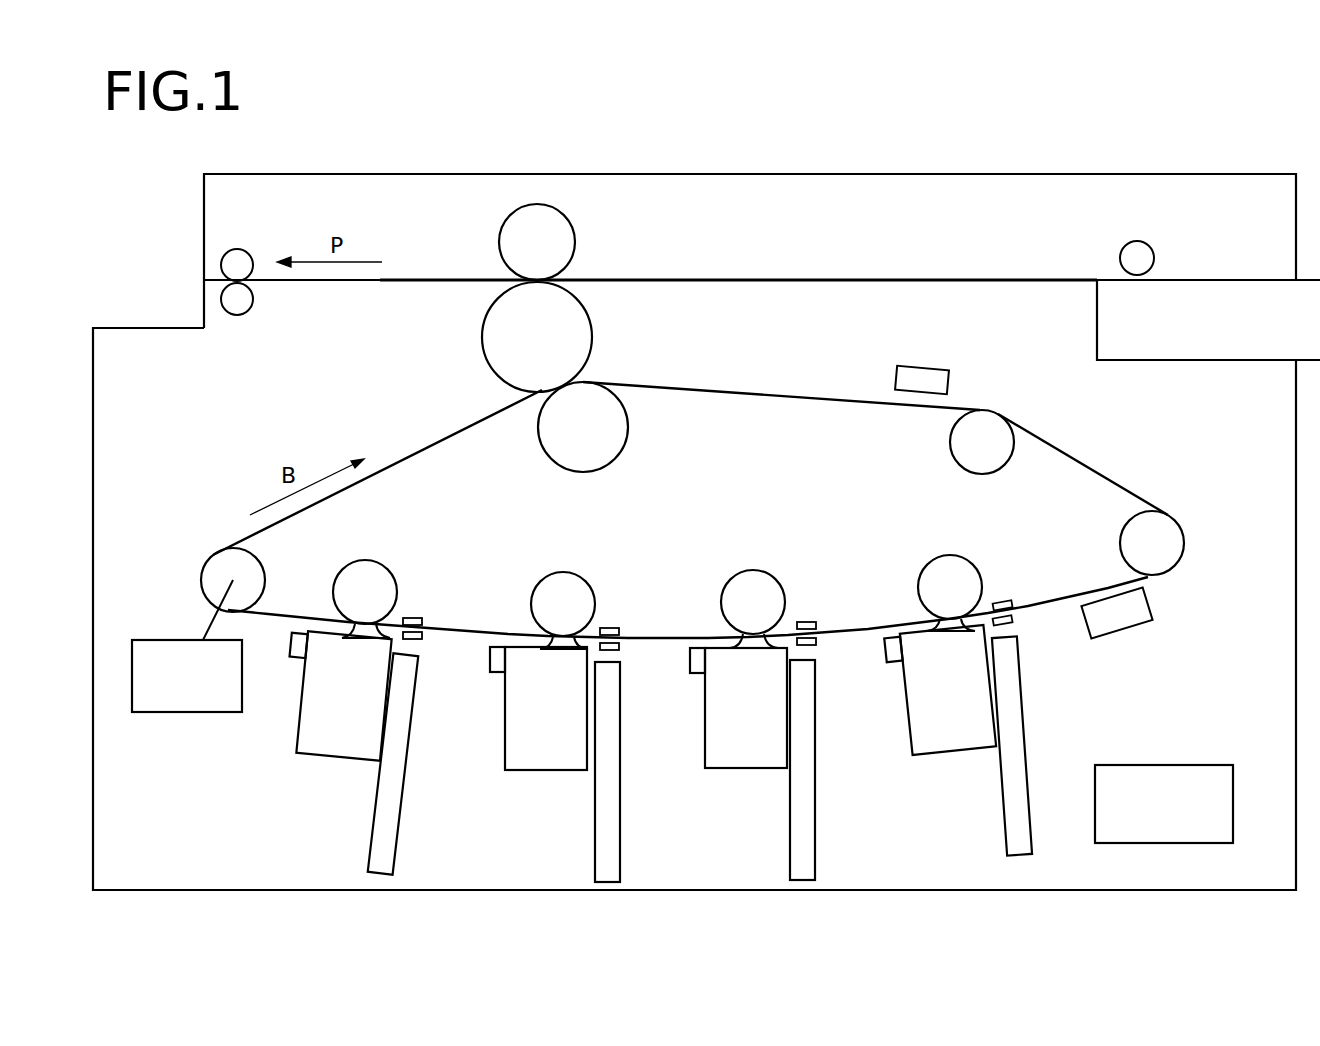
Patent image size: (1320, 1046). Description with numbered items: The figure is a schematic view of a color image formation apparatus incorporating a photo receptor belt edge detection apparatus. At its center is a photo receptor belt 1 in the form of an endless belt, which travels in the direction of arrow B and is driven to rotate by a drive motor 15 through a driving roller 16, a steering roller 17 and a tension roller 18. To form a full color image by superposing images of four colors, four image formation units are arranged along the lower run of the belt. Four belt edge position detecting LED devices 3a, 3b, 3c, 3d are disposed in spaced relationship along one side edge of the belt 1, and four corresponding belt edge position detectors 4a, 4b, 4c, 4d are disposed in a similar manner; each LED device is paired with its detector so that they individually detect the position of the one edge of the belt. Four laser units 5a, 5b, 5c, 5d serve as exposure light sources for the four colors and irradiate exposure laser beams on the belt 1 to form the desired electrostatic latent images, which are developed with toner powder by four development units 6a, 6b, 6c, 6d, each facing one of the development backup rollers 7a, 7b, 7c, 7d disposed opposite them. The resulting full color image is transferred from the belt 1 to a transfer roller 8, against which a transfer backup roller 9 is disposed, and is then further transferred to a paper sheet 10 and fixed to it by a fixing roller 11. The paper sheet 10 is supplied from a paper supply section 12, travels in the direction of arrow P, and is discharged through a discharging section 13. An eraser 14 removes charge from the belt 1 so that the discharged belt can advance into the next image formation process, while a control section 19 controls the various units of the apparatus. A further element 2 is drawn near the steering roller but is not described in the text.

The photo receptor belt 1 is at (1075, 455).
The belt cleaning device 2 is at (1140, 605).
The belt edge position detecting LED device 3a is at (1012, 620).
The belt edge position detecting LED device 3b is at (818, 642).
The belt edge position detecting LED device 3c is at (620, 646).
The belt edge position detecting LED device 3d is at (424, 637).
The belt edge position detector 4a is at (1012, 603).
The belt edge position detector 4b is at (818, 622).
The belt edge position detector 4c is at (620, 628).
The belt edge position detector 4d is at (424, 618).
The laser unit 5a is at (1026, 735).
The laser unit 5b is at (815, 838).
The laser unit 5c is at (612, 838).
The laser unit 5d is at (398, 840).
The development unit 6a is at (957, 752).
The development unit 6b is at (745, 770).
The development unit 6c is at (545, 770).
The development unit 6d is at (330, 762).
The development backup roller 7a is at (948, 555).
The development backup roller 7b is at (753, 570).
The development backup roller 7c is at (563, 572).
The development backup roller 7d is at (367, 560).
The transfer roller 8 is at (578, 338).
The transfer backup roller 9 is at (624, 400).
The paper sheet 10 is at (428, 282).
The fixing roller 11 is at (565, 232).
The paper supply section 12 is at (1153, 255).
The discharging section 13 is at (250, 252).
The eraser 14 is at (950, 382).
The drive motor 15 is at (192, 712).
The driving roller 16 is at (208, 560).
The steering roller 17 is at (1185, 540).
The tension roller 18 is at (950, 432).
The control section 19 is at (1165, 765).